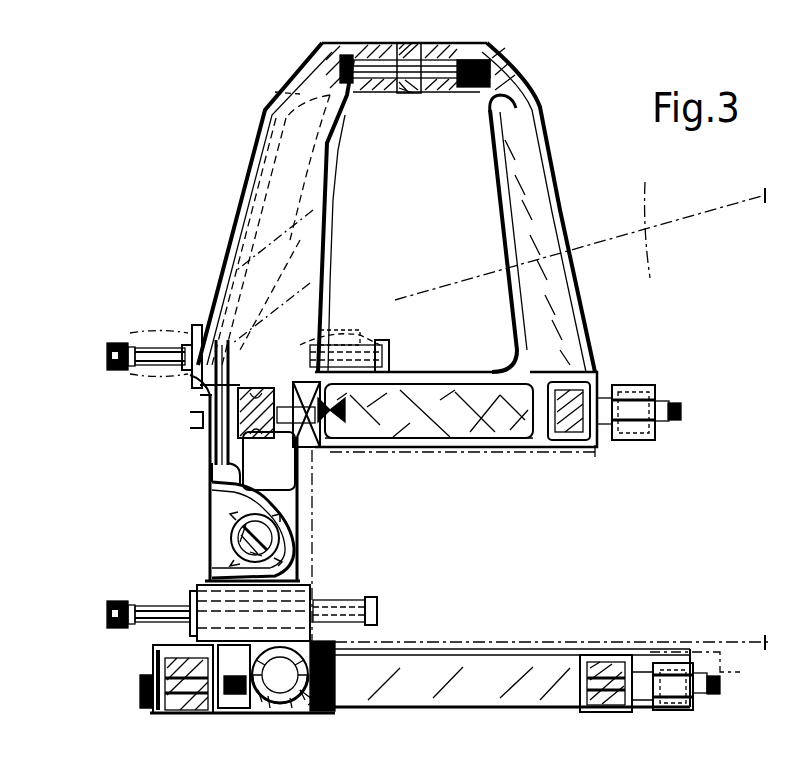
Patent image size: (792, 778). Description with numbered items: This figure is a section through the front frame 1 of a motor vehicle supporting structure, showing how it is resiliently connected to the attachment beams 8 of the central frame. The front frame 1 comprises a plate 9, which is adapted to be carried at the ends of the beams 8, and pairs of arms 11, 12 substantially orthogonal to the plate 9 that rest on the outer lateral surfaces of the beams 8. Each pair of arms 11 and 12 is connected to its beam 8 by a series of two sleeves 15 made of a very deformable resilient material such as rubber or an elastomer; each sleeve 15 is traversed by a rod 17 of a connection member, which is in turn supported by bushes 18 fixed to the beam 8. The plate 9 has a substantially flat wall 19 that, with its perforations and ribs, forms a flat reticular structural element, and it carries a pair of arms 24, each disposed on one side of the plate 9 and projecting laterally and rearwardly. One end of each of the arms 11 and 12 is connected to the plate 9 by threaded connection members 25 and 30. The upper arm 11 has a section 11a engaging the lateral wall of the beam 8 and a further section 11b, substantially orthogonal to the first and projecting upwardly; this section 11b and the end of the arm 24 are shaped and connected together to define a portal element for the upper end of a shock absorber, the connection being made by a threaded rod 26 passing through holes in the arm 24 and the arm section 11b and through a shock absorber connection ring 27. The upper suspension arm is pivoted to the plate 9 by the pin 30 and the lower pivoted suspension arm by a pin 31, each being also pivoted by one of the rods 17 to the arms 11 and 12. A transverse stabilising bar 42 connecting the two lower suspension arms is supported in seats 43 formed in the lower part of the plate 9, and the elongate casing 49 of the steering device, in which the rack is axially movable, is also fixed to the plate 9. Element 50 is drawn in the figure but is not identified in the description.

The front frame 1 is at (163, 492).
The attachment beam 8 is at (580, 225).
The plate 9 is at (310, 520).
The arm 11 is at (428, 447).
The arm section 11a is at (460, 447).
The arm section 11b is at (563, 220).
The arm 12 is at (463, 649).
The sleeve 15 is at (655, 393).
The rod 17 is at (178, 345).
The bush 18 is at (140, 340).
The flat wall 19 is at (305, 470).
The arm 24 is at (273, 193).
The threaded connection member 25 is at (322, 711).
The threaded rod 26 is at (380, 70).
The shock absorber connection ring 27 is at (410, 93).
The pin 30 is at (290, 427).
The pin 31 is at (168, 692).
The transverse stabilising bar 42 is at (277, 662).
The seat 43 is at (268, 690).
The casing 49 is at (240, 528).
The lever 50 is at (250, 525).